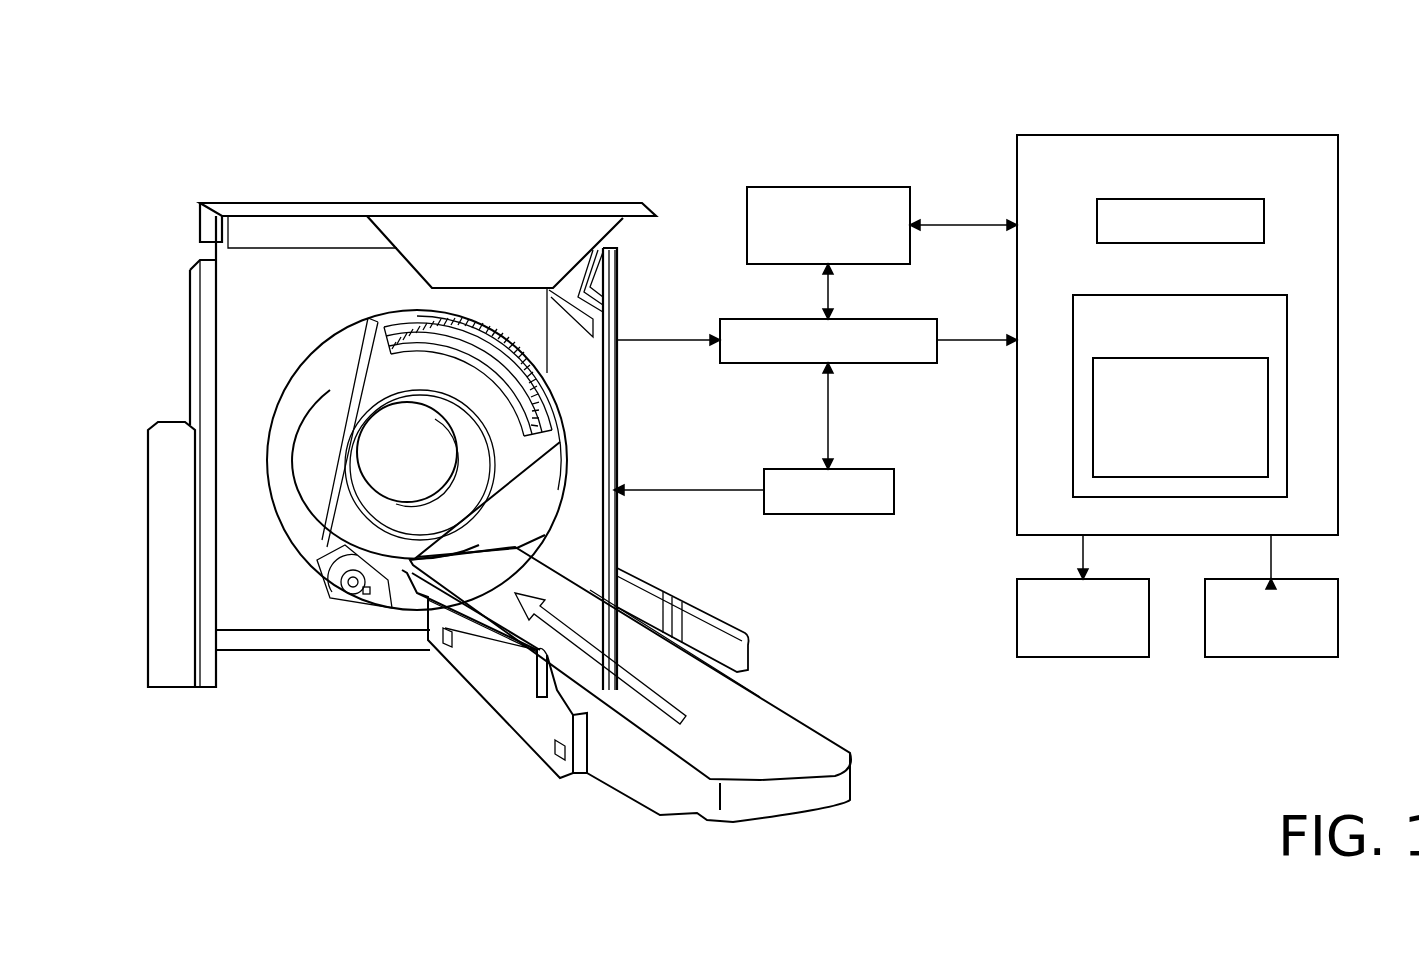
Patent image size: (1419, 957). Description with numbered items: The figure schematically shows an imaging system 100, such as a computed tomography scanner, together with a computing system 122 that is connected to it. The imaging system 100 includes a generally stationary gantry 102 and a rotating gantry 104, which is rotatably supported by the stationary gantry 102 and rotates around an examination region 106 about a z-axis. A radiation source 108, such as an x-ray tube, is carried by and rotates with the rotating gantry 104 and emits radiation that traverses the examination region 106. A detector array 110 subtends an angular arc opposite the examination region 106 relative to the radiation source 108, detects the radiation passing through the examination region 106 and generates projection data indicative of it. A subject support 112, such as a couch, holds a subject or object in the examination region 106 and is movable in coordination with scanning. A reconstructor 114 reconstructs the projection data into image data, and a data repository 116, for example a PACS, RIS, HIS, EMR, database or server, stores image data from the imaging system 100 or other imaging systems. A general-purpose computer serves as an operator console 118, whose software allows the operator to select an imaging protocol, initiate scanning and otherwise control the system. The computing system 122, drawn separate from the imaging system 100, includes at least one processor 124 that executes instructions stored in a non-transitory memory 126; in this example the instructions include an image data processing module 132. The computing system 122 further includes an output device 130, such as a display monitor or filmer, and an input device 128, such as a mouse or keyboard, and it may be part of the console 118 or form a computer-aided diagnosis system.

The imaging system 100 is at (248, 157).
The stationary gantry 102 is at (228, 357).
The rotating gantry 104 is at (387, 372).
The examination region 106 is at (420, 465).
The radiation source 108 is at (353, 590).
The detector array 110 is at (530, 390).
The subject support 112 is at (787, 748).
The reconstructor 114 is at (733, 328).
The data repository 116 is at (768, 190).
The operator console 118 is at (880, 508).
The computing system 122 is at (1045, 150).
The processor 124 is at (1255, 222).
The memory 126 is at (1275, 328).
The input device 128 is at (1228, 657).
The output device 130 is at (1037, 657).
The image data processing module 132 is at (1258, 378).